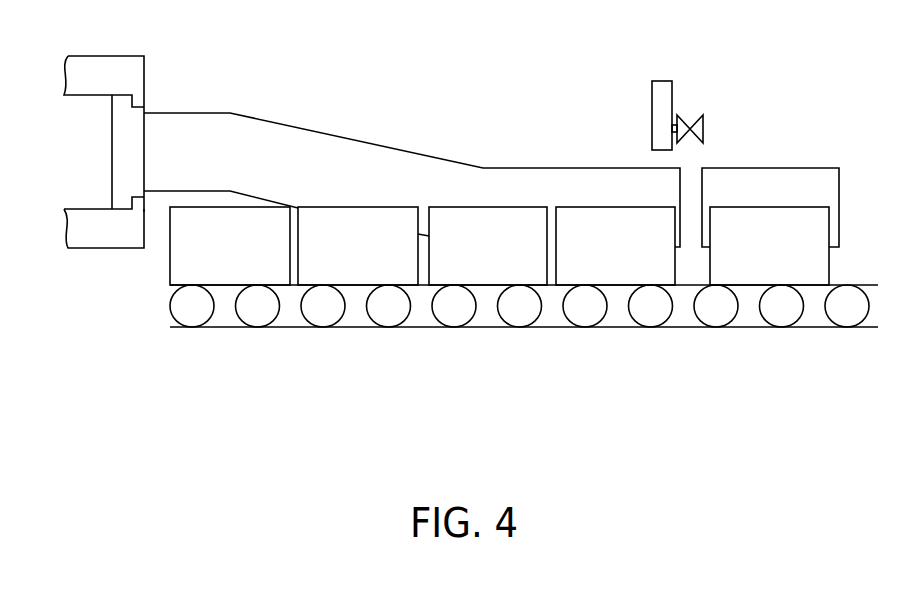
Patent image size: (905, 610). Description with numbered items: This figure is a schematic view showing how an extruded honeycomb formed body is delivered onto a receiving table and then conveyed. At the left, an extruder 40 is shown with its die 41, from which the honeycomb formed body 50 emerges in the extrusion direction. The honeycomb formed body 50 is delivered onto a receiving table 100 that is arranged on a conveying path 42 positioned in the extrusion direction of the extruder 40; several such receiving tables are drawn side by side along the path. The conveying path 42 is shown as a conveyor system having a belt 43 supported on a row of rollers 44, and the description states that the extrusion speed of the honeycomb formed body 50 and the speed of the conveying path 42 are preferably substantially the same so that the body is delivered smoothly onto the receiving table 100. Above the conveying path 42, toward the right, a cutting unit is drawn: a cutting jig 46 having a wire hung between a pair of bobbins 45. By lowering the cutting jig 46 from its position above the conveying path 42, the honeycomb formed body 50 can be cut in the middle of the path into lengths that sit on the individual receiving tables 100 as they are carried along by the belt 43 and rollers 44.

The extruder 40 is at (105, 233).
The die 41 is at (120, 157).
The conveying path 42 is at (524, 374).
The belt 43 is at (620, 329).
The rollers 44 is at (589, 344).
The bobbins 45 is at (700, 128).
The cutting jig 46 is at (665, 115).
The honeycomb formed body 50 is at (340, 157).
The receiving table 100 is at (488, 237).